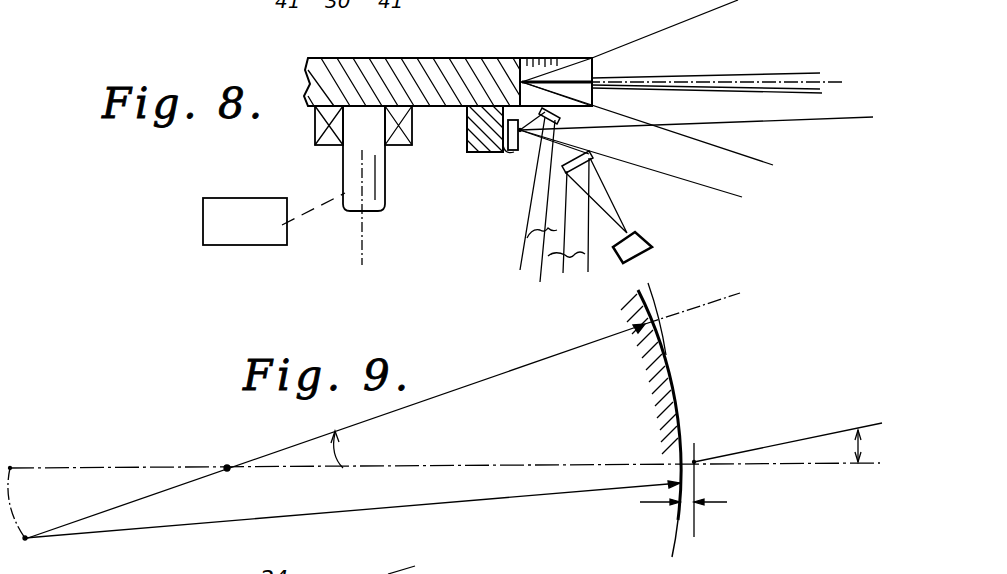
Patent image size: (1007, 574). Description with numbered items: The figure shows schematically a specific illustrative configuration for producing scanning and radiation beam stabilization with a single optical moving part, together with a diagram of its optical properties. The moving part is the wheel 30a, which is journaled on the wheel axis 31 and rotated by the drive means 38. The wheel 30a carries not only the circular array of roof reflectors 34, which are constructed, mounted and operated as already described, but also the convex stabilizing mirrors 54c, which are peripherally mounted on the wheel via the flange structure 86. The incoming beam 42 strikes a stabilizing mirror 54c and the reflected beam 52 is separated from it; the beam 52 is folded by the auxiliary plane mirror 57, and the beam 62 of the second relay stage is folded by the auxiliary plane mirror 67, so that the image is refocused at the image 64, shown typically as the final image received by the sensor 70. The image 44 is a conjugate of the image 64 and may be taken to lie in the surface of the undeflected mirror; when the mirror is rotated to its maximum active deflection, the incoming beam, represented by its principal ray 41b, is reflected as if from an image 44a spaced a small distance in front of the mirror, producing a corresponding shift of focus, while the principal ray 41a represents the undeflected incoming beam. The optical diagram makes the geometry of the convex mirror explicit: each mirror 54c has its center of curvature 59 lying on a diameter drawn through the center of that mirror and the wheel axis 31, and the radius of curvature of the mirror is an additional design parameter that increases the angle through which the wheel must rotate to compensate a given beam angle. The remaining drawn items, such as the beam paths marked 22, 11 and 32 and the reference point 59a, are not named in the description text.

In FIG. 8, the wheel 30a is at (457, 53).
In FIG. 8, the roof reflectors 34 is at (548, 57).
In FIG. 8, the light beam 22 is at (741, 0).
In FIG. 8, the beam axis 11 is at (828, 76).
In FIG. 8, the reflected beam 32 is at (765, 117).
In FIG. 8, the incoming beam 42 is at (714, 144).
In FIG. 8, the plane mirror 57 is at (562, 120).
In FIG. 8, the plane mirror 67 is at (586, 165).
In FIG. 8, the image 64 is at (628, 232).
In FIG. 8, the sensor 70 is at (655, 242).
In FIG. 8, the reflected beam 52 is at (527, 240).
In FIG. 8, the beam 62 is at (573, 262).
In FIG. 8, the flange structure 86 is at (467, 142).
In FIG. 8, the convex stabilizing mirror 54c is at (507, 150).
In FIG. 9, the convex stabilizing mirror 54c is at (660, 440).
In FIG. 8, the image 44 is at (521, 150).
In FIG. 9, the image 44 is at (676, 459).
In FIG. 9, the image 44a is at (696, 460).
In FIG. 8, the wheel axis 31 is at (362, 242).
In FIG. 9, the wheel axis 31 is at (227, 466).
In FIG. 8, the drive means 38 is at (255, 247).
In FIG. 9, the center of curvature 59 is at (25, 538).
In FIG. 9, the reference point 59a is at (10, 466).
In FIG. 9, the principal ray 41a is at (800, 465).
In FIG. 9, the principal ray 41b is at (828, 433).